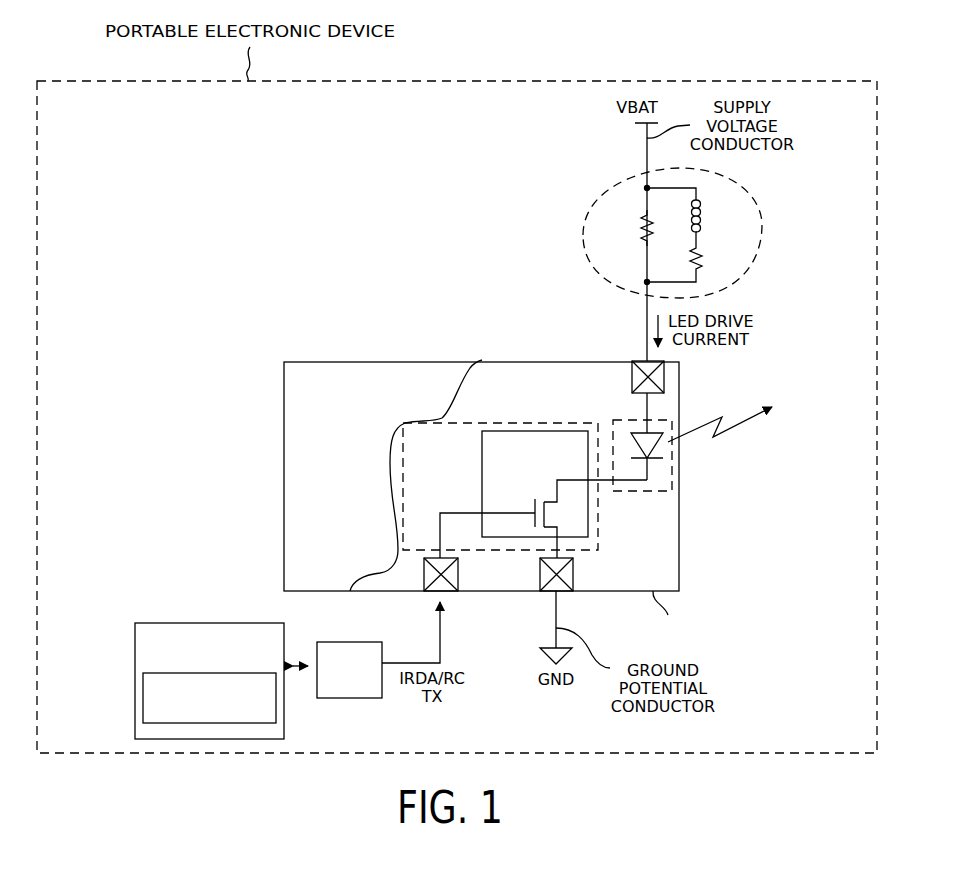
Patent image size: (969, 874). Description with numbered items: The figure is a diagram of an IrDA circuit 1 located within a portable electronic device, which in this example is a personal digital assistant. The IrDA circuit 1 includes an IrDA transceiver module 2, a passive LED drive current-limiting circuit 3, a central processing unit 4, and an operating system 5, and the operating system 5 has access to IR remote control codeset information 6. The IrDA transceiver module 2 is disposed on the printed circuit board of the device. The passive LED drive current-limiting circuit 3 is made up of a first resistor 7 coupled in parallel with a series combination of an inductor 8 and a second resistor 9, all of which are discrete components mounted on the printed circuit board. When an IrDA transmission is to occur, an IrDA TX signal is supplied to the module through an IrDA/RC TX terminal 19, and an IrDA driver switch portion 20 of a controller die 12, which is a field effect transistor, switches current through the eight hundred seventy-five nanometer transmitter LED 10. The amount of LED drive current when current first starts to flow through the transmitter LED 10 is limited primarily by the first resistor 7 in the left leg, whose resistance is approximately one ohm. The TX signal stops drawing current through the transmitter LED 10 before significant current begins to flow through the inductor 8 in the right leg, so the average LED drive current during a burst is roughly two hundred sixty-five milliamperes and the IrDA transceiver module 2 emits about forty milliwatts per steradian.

The IrDA circuit 1 is at (233, 310).
The IrDA transceiver module 2 is at (418, 362).
The passive LED drive current-limiting circuit 3 is at (618, 228).
The central processing unit 4 is at (357, 642).
The operating system 5 is at (184, 623).
The IR remote control codeset information 6 is at (209, 698).
The first resistor 7 is at (636, 226).
The inductor 8 is at (704, 212).
The second resistor 9 is at (704, 262).
The transmitter LED 10 is at (662, 452).
The controller die 12 is at (598, 536).
The IrDA/RC TX terminal 19 is at (450, 593).
The IrDA driver switch portion 20 is at (482, 484).